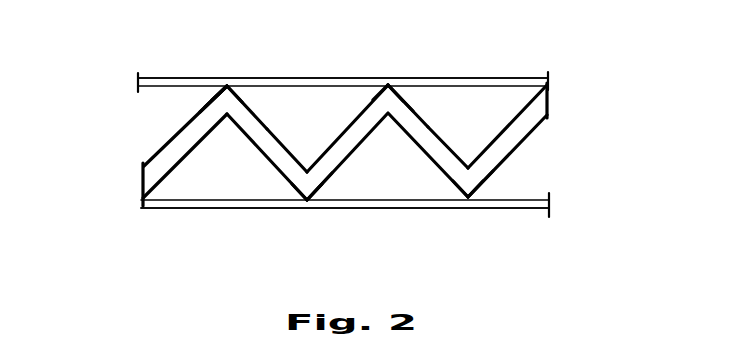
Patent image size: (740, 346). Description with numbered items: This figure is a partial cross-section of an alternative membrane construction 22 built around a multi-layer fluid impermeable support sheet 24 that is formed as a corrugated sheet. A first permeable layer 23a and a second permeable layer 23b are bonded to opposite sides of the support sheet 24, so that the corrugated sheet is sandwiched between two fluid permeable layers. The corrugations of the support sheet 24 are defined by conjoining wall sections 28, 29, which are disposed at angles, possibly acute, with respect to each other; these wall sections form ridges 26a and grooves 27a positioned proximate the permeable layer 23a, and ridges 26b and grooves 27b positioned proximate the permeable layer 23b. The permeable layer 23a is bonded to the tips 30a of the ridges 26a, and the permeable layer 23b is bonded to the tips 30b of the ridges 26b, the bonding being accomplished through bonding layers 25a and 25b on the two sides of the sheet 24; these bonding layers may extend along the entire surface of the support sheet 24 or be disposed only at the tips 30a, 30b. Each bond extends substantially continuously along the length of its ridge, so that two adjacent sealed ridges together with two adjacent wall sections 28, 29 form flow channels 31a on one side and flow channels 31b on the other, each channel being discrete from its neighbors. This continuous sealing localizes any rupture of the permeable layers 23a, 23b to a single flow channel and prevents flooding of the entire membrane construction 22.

The membrane construction 22 is at (116, 78).
The first permeable layer 23a is at (343, 83).
The second permeable layer 23b is at (350, 210).
The support sheet 24 is at (152, 146).
The bonding layer 25a is at (215, 86).
The bonding layer 25b is at (202, 136).
The ridges 26a is at (213, 102).
The ridges 26b is at (316, 200).
The grooves 27a is at (247, 113).
The grooves 27b is at (308, 170).
The wall section 28 is at (271, 137).
The wall section 29 is at (190, 121).
The tips 30a is at (227, 86).
The tips 30b is at (307, 199).
The flow channels 31a is at (311, 90).
The flow channels 31b is at (222, 193).